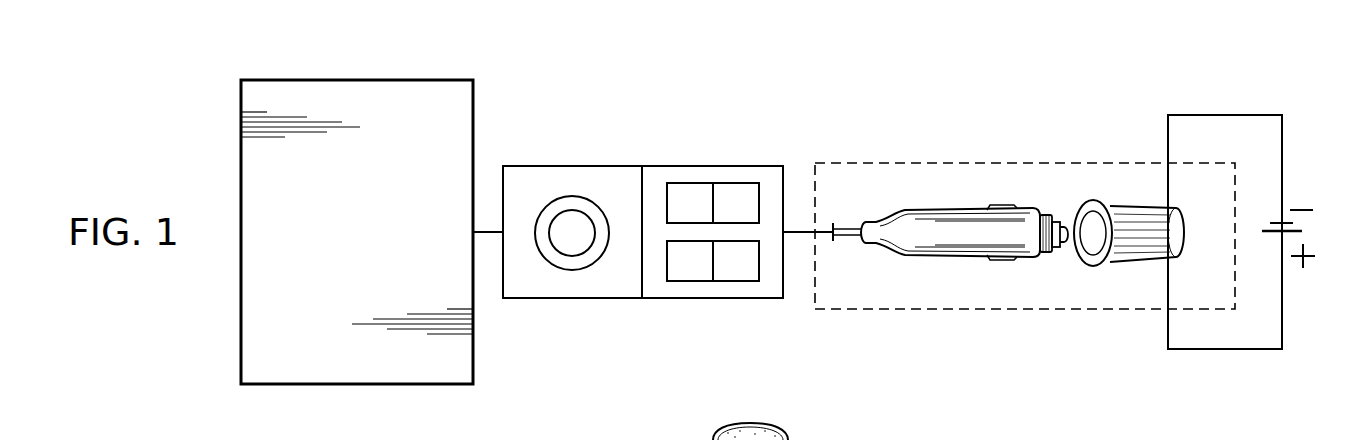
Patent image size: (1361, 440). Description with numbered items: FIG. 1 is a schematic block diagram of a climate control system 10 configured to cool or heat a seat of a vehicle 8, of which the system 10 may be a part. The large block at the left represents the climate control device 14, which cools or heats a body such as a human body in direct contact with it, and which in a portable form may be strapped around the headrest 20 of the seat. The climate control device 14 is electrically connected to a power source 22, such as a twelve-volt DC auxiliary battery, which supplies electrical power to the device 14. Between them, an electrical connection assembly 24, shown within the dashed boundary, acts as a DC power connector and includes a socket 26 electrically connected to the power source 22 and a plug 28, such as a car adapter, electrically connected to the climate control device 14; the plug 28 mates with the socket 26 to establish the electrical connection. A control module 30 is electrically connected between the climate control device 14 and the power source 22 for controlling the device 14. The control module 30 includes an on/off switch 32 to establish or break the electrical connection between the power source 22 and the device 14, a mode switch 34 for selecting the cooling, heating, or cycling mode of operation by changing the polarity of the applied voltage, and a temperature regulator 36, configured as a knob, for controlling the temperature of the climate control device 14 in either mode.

The vehicle 8 is at (1146, 68).
The climate control system 10 is at (1030, 104).
The climate control device 14 is at (356, 384).
The headrest 20 is at (838, 439).
The power source 22 is at (1282, 185).
The electrical connection assembly 24 is at (840, 310).
The socket 26 is at (1108, 204).
The plug 28 is at (933, 209).
The control module 30 is at (643, 246).
The on/off switch 32 is at (735, 275).
The mode switch 34 is at (735, 189).
The temperature regulator 36 is at (572, 196).